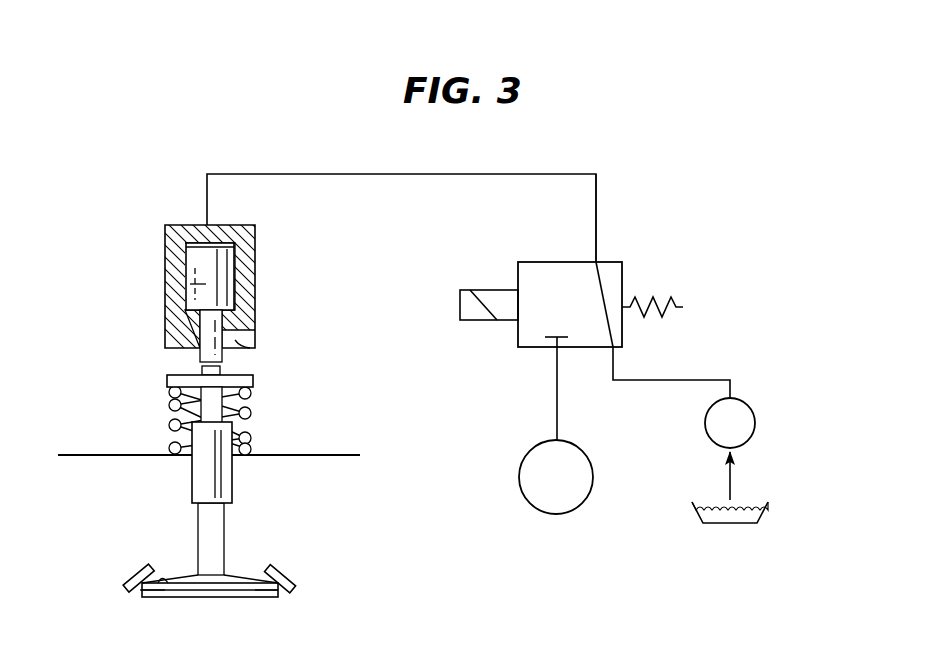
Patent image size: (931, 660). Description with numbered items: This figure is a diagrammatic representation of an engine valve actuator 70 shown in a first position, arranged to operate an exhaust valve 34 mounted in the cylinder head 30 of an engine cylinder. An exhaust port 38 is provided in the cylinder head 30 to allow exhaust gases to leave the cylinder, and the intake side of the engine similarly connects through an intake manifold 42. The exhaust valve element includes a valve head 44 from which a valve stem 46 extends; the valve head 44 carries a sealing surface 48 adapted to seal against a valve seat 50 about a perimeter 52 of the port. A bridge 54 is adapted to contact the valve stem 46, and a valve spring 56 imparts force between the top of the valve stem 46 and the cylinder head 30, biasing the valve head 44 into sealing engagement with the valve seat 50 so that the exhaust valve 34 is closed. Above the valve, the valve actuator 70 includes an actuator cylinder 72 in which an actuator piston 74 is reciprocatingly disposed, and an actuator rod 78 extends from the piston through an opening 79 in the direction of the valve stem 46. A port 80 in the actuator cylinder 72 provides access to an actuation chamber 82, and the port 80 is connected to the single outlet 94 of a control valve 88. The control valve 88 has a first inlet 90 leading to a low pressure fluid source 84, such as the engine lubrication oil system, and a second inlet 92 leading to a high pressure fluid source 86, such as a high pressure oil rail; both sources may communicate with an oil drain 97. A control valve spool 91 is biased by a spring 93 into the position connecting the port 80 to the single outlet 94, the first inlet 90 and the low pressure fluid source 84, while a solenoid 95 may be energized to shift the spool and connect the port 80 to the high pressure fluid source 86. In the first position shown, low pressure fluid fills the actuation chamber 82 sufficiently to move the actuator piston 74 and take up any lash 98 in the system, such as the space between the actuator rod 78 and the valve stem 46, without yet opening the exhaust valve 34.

The cylinder head 30 is at (78, 455).
The exhaust valve 34 is at (158, 532).
The exhaust port 38 is at (142, 594).
The intake manifold 42 is at (240, 480).
The valve head 44 is at (222, 597).
The valve stem 46 is at (210, 520).
The sealing surface 48 is at (165, 578).
The valve seat 50 is at (282, 594).
The perimeter 52 is at (287, 572).
The bridge 54 is at (253, 381).
The valve spring 56 is at (251, 436).
The valve actuator 70 is at (185, 205).
The actuator cylinder 72 is at (180, 258).
The actuator piston 74 is at (203, 287).
The actuator rod 78 is at (206, 342).
The opening 79 is at (237, 346).
The port 80 is at (207, 225).
The actuation chamber 82 is at (222, 247).
The low pressure fluid source 84 is at (736, 428).
The high pressure fluid source 86 is at (556, 477).
The control valve 88 is at (622, 268).
The first inlet 90 is at (550, 349).
The control valve spool 91 is at (597, 290).
The second inlet 92 is at (614, 362).
The spring 93 is at (684, 307).
The single outlet 94 is at (600, 262).
The solenoid 95 is at (466, 322).
The oil drain 97 is at (742, 524).
The lash 98 is at (190, 363).